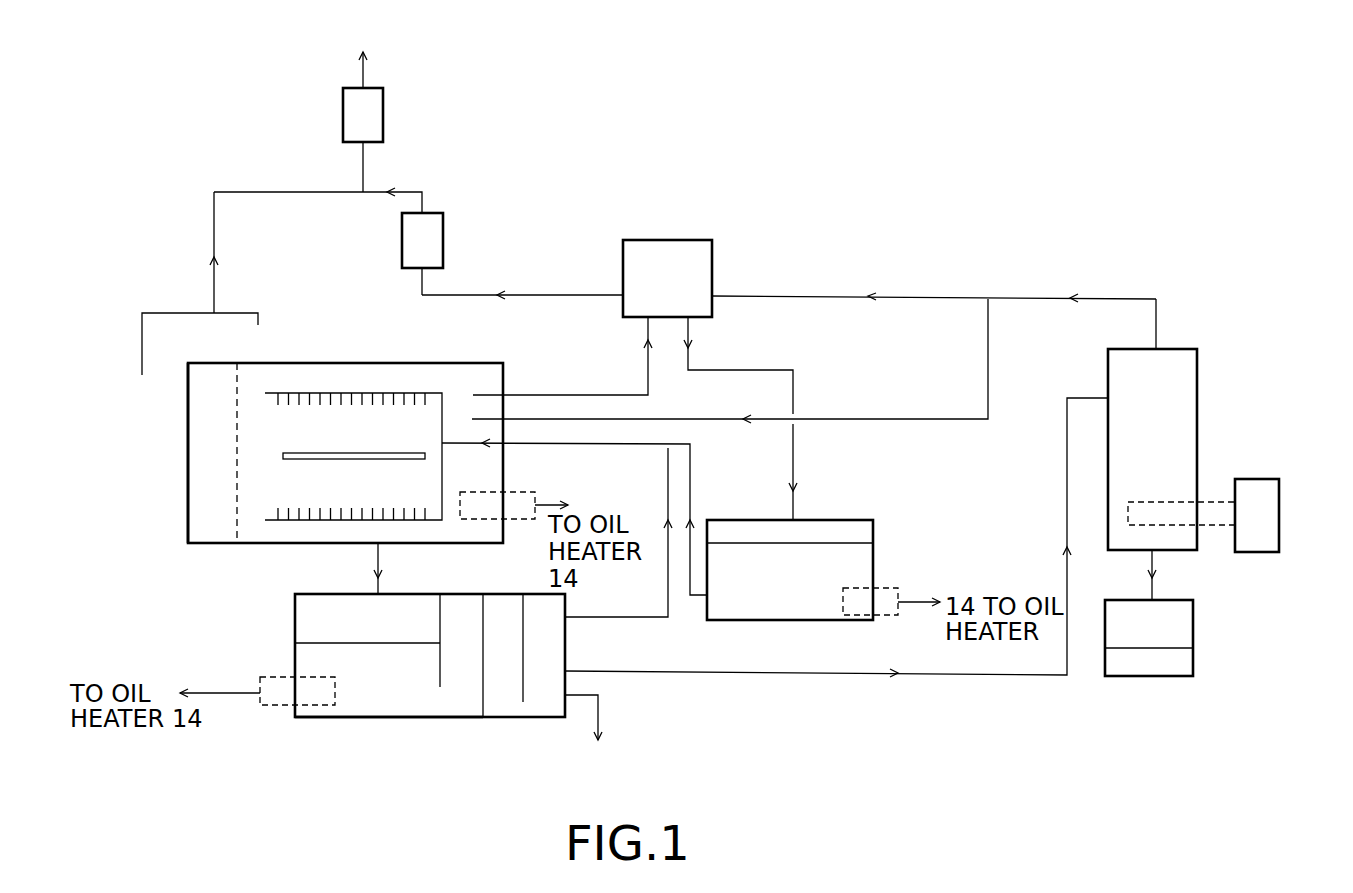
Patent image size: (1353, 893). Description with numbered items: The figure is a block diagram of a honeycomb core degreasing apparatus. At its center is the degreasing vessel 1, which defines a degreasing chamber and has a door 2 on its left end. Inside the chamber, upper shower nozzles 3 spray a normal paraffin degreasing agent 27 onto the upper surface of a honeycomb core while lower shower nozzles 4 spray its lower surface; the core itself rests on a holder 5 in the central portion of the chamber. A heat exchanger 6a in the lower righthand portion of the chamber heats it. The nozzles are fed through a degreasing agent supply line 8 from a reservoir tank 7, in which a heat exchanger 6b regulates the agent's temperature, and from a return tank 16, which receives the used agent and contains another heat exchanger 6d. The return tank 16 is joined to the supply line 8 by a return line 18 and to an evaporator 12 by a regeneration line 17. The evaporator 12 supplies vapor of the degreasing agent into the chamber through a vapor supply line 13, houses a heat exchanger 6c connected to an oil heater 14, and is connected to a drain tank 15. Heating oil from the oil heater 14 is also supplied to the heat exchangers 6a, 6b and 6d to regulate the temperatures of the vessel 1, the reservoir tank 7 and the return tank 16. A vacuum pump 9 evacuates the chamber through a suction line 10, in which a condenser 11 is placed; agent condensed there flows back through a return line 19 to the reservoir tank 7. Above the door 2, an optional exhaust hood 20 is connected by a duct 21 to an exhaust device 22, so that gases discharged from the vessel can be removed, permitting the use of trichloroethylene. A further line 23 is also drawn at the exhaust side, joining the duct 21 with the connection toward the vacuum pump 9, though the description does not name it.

The degreasing vessel 1 is at (315, 361).
The door 2 is at (187, 469).
The upper shower nozzles 3 is at (385, 393).
The lower shower nozzles 4 is at (318, 518).
The holder 5 is at (292, 461).
The heat exchanger 6a is at (483, 519).
The heat exchanger 6b is at (850, 588).
The heat exchanger 6c is at (1152, 502).
The heat exchanger 6d is at (257, 675).
The reservoir tank 7 is at (440, 717).
The degreasing agent supply line 8 is at (562, 444).
The vacuum pump 9 is at (443, 235).
The suction line 10 is at (583, 295).
The condenser 11 is at (668, 238).
The evaporator 12 is at (1197, 392).
The vapor supply line 13 is at (905, 419).
The oil heater 14 is at (1279, 510).
The drain tank 15 is at (1193, 640).
The return tank 16 is at (322, 717).
The regeneration line 17 is at (995, 675).
The return line 18 is at (666, 584).
The return line 19 is at (793, 452).
The exhaust hood 20 is at (140, 365).
The duct 21 is at (214, 225).
The exhaust device 22 is at (383, 115).
The exhaust line 23 is at (405, 192).
The normal paraffin degreasing agent 27 is at (295, 618).